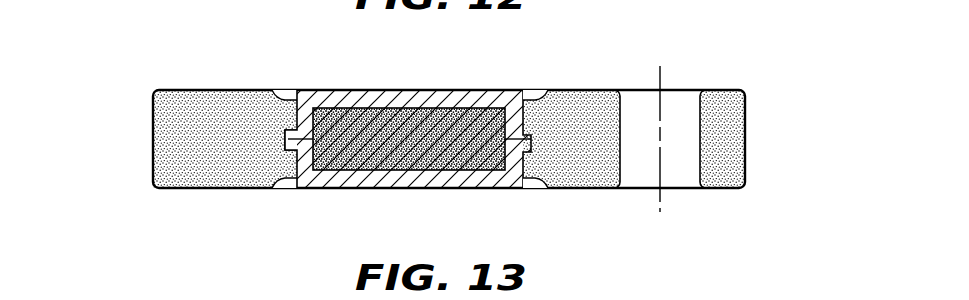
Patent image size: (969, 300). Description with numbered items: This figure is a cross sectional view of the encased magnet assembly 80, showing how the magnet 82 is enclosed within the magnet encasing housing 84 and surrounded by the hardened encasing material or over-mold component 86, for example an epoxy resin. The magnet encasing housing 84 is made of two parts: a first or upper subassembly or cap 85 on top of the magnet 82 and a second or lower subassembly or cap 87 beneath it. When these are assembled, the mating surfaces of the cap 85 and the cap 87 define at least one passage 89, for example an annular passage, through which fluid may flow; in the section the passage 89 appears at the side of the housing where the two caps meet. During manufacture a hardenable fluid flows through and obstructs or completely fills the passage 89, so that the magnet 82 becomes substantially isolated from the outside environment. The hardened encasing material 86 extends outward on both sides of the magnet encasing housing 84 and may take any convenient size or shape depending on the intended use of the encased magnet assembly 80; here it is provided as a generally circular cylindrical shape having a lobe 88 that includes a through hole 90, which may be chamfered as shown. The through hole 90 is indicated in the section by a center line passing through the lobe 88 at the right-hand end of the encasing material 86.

The encased magnet assembly 80 is at (673, 31).
The magnet 82 is at (424, 144).
The magnet encasing housing 84 is at (326, 205).
The first or upper subassembly or cap 85 is at (407, 98).
The hardened encasing material or over-mold component 86 is at (170, 140).
The second or lower subassembly or cap 87 is at (412, 172).
The lobe 88 is at (735, 140).
The passage 89 is at (284, 134).
The through hole 90 is at (661, 70).